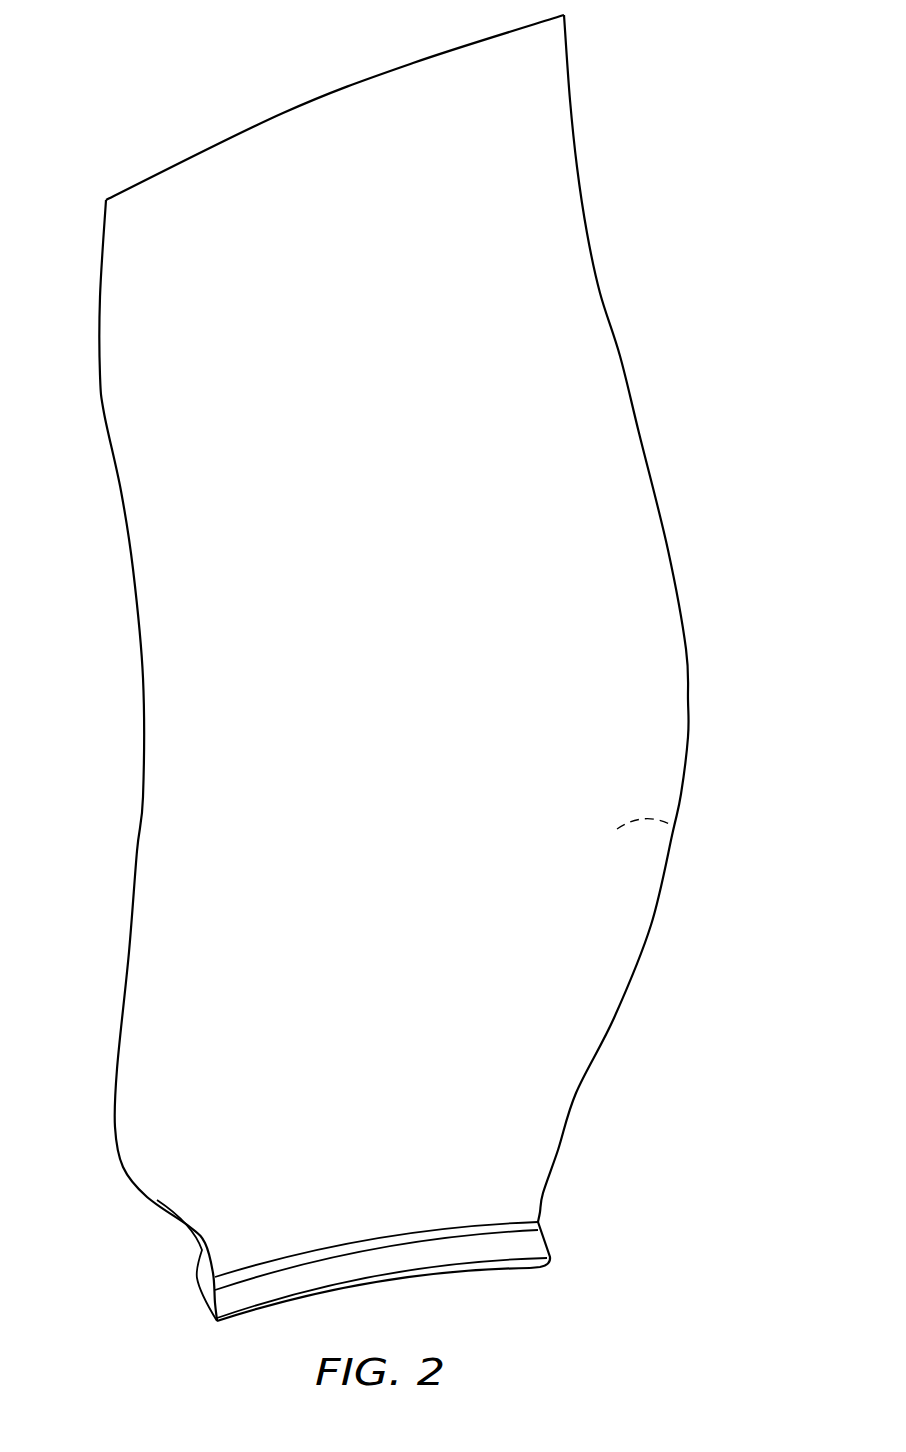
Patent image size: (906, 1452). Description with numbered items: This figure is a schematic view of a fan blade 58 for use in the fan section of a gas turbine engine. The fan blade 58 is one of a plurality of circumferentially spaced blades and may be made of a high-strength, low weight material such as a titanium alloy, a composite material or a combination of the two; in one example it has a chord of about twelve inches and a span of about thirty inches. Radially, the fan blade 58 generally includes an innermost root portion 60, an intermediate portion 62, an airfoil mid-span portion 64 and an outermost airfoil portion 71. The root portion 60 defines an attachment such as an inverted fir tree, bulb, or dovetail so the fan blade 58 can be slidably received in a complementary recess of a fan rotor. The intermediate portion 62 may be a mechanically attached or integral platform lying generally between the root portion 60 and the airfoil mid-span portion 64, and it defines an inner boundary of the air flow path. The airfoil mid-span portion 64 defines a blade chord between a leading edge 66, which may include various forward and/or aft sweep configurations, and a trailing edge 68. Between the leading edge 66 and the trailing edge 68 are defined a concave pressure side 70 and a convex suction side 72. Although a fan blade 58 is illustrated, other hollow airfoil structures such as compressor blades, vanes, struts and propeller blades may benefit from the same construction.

The fan blade 58 is at (413, 689).
The root portion 60 is at (480, 1249).
The intermediate portion 62 is at (230, 1250).
The airfoil mid-span portion 64 is at (413, 667).
The leading edge 66 is at (688, 651).
The trailing edge 68 is at (135, 853).
The concave pressure side 70 is at (335, 211).
The outermost airfoil portion 71 is at (283, 113).
The convex suction side 72 is at (673, 829).